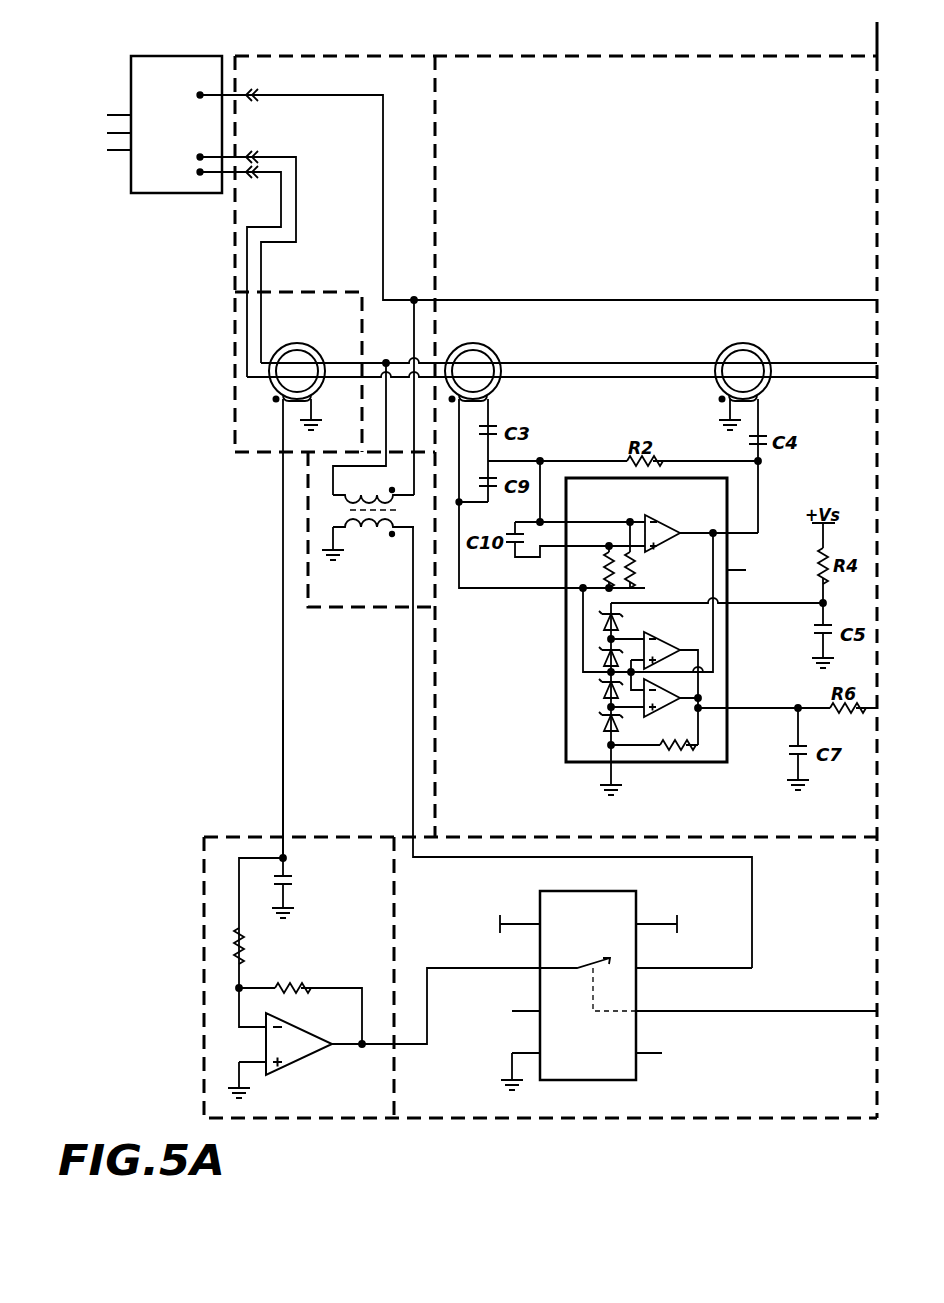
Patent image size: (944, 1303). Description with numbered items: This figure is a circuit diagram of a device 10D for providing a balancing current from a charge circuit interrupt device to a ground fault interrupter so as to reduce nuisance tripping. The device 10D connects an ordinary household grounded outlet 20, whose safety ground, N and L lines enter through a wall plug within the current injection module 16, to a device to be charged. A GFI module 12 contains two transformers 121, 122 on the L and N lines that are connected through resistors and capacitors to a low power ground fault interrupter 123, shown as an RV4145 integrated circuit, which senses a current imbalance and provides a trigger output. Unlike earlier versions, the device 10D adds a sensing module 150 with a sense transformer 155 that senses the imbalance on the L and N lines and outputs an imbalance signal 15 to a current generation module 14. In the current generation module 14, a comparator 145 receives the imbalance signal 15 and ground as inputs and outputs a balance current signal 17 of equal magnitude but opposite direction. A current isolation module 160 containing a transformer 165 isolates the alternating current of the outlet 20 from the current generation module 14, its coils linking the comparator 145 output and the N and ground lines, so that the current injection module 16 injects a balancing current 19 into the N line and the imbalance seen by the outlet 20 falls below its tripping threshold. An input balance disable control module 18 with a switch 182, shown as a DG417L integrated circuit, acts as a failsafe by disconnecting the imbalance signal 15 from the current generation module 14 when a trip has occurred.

The device 10D is at (128, 1057).
The GFI module 12 is at (553, 56).
The current generation module 14 is at (366, 956).
The imbalance signal 15 is at (283, 718).
The current injection module 16 is at (271, 56).
The balance current signal 17 is at (374, 1044).
The input balance disable control module 18 is at (648, 1030).
The balancing current 19 is at (414, 325).
The household grounded outlet 20 is at (158, 56).
The transformer 121 is at (480, 345).
The transformer 122 is at (750, 345).
The low power ground fault interrupter 123 is at (690, 765).
The comparator 145 is at (292, 1072).
The sensing module 150 is at (233, 422).
The sense transformer 155 is at (304, 345).
The current isolation module 160 is at (530, 634).
The transformer 165 is at (376, 536).
The switch 182 is at (636, 1072).